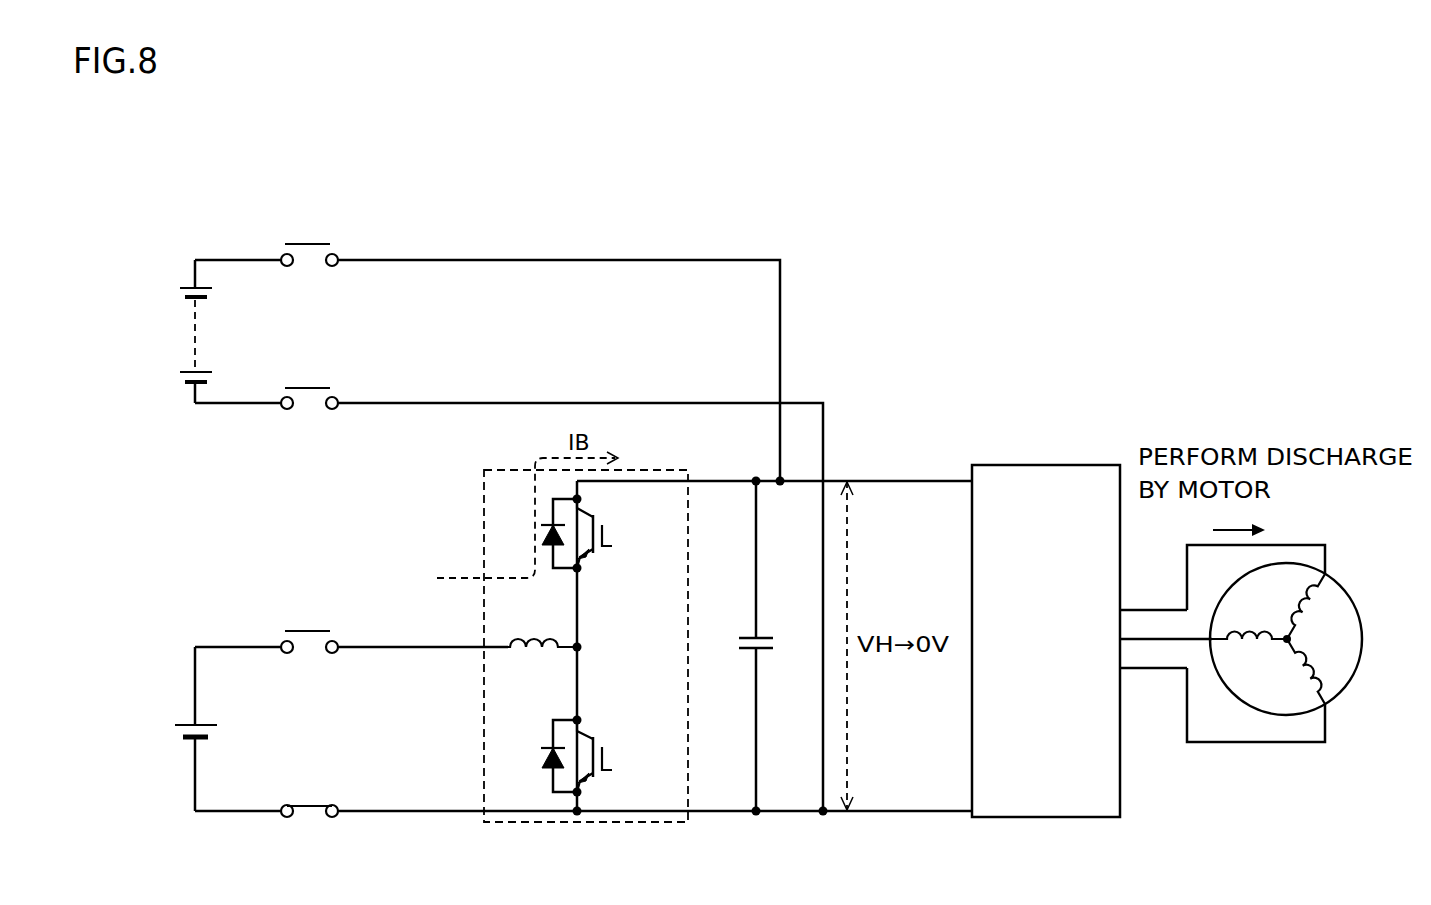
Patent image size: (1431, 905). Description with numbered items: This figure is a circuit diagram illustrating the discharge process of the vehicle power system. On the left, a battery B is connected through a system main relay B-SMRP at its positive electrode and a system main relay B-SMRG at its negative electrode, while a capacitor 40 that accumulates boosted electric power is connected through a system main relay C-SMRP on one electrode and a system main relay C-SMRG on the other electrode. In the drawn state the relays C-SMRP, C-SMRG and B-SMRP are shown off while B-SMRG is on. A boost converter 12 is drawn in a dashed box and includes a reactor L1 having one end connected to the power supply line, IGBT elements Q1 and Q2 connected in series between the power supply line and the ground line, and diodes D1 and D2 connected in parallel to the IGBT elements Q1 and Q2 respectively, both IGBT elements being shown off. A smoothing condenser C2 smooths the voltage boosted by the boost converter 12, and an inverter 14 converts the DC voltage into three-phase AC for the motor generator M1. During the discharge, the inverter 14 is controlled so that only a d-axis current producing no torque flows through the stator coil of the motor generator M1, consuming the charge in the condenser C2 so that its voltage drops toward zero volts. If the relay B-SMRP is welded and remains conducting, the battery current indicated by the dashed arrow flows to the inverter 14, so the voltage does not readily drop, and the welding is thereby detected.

The capacitor 40 is at (185, 315).
The boost converter 12 is at (637, 468).
The inverter 14 is at (1043, 463).
The battery B is at (188, 723).
The smoothing condenser C2 is at (768, 650).
The reactor L1 is at (542, 626).
The diode D1 is at (539, 533).
The diode D2 is at (539, 756).
The IGBT element Q1 is at (621, 533).
The IGBT element Q2 is at (621, 756).
The motor generator M1 is at (1338, 587).
The system main relay C-SMRP is at (320, 244).
The system main relay C-SMRG is at (320, 388).
The system main relay B-SMRP is at (320, 631).
The system main relay B-SMRG is at (320, 806).